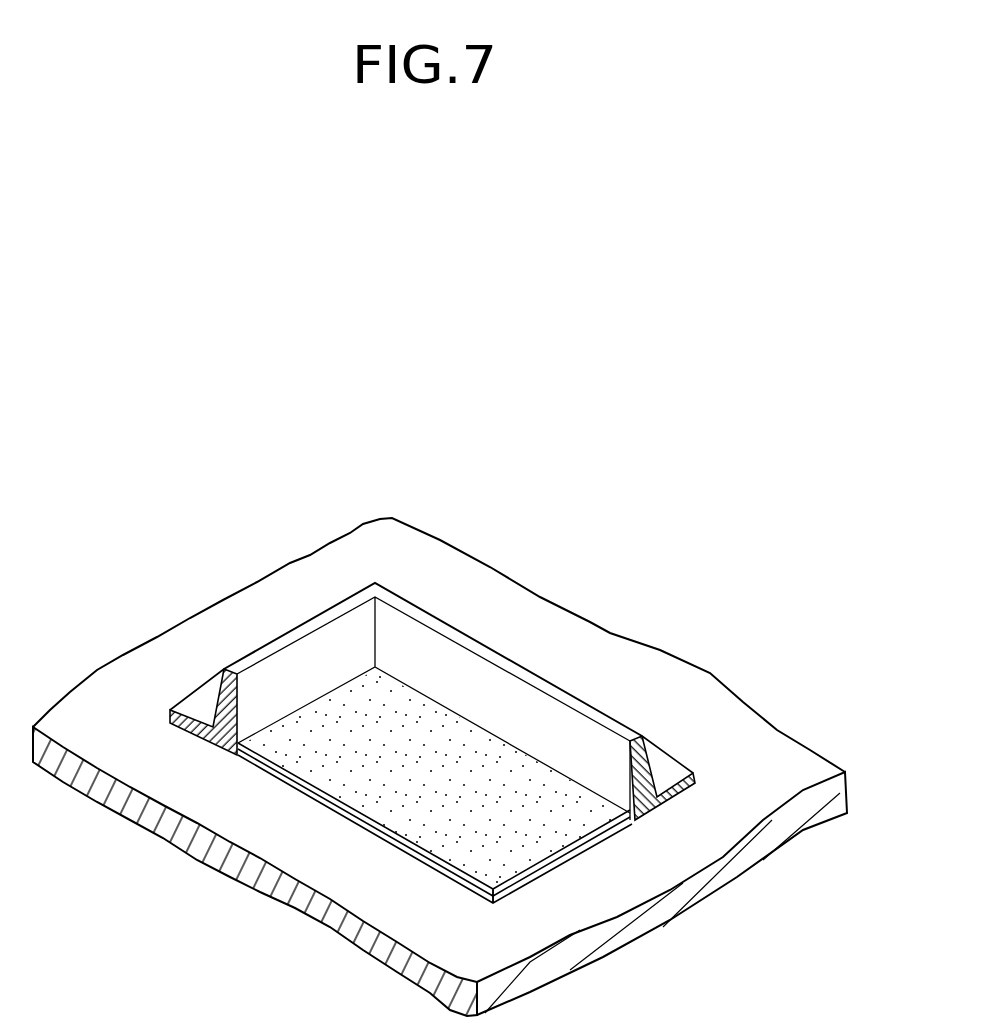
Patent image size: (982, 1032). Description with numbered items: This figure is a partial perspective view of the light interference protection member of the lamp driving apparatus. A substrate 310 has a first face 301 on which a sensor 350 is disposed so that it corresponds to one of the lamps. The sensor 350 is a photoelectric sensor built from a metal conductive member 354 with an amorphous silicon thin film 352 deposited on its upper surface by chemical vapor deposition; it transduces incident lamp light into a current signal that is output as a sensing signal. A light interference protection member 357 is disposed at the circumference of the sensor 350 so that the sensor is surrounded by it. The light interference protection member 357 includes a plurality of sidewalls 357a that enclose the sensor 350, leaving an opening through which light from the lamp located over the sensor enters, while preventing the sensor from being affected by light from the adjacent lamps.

The first face 301 is at (777, 752).
The substrate 310 is at (748, 951).
The sensor 350 is at (230, 965).
The amorphous silicon thin film 352 is at (328, 810).
The conductive member 354 is at (372, 836).
The light interference protection member 357 is at (668, 753).
The sidewall 357a is at (528, 700).